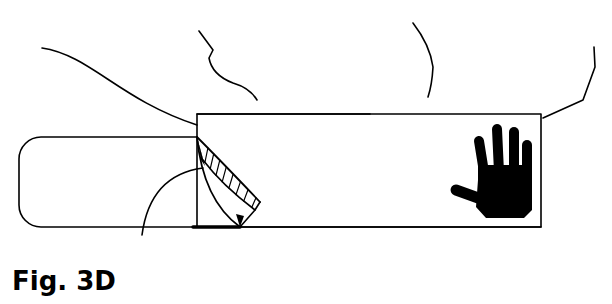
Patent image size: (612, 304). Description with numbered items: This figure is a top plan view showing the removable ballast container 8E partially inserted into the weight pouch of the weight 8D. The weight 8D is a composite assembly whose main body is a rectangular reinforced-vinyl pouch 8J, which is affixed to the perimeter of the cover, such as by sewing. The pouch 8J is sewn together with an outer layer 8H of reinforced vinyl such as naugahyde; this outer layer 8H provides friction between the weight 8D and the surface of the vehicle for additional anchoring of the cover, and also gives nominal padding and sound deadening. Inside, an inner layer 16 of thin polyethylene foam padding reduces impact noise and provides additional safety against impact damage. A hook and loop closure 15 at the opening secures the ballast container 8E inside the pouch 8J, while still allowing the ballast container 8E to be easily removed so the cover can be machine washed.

The ballast container 8E is at (100, 147).
The outer layer 8H is at (260, 135).
The pouch 8J is at (334, 135).
The weight 8D is at (368, 218).
The hook and loop closure 15 is at (203, 228).
The inner layer 16 is at (242, 228).